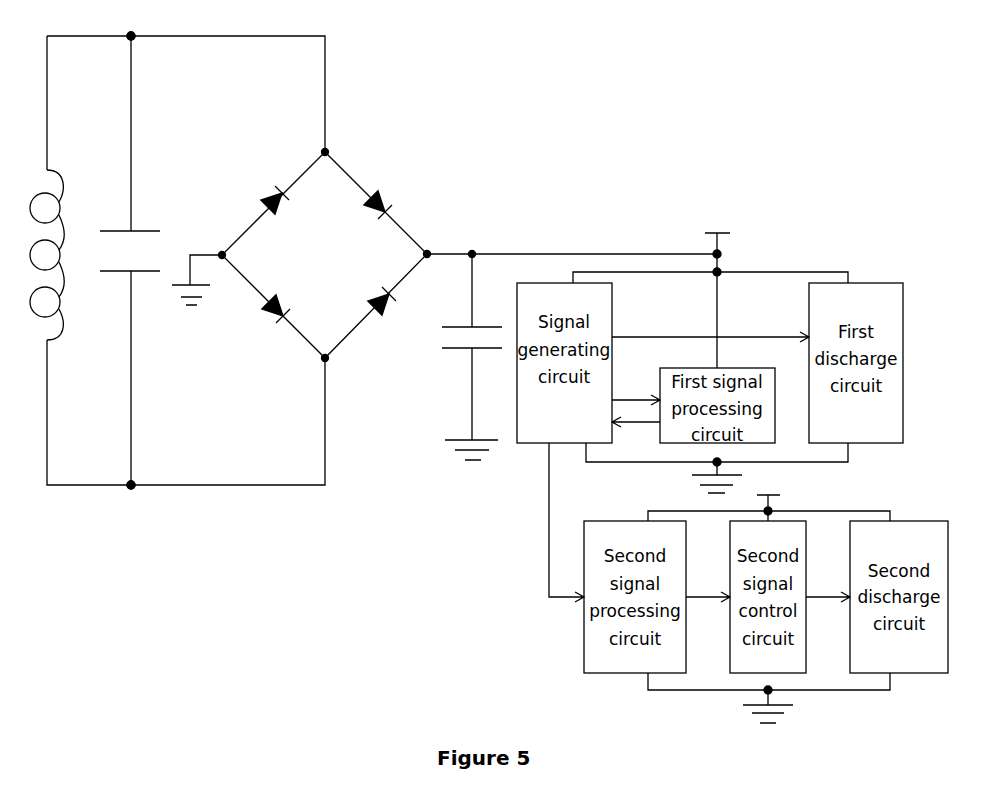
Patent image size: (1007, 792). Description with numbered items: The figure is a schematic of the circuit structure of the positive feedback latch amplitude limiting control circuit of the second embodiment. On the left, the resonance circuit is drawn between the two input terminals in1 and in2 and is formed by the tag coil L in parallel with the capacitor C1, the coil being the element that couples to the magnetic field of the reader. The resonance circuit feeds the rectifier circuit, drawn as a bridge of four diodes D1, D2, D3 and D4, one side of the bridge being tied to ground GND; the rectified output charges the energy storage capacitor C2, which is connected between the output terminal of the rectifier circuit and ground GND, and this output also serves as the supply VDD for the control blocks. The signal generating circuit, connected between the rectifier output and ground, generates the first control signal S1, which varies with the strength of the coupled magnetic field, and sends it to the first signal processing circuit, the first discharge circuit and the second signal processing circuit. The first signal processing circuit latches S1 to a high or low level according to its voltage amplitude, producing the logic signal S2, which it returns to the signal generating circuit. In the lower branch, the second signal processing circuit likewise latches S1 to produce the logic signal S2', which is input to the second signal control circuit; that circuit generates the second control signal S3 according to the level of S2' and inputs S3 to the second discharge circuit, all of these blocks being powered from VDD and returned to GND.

The inductor L is at (60, 255).
The first capacitor C1 is at (136, 251).
The energy storage capacitor C2 is at (458, 303).
The first diode D1 is at (264, 195).
The second diode D2 is at (266, 318).
The third diode D3 is at (369, 297).
The fourth diode D4 is at (386, 193).
The first input terminal in1 is at (128, 21).
The second input terminal in2 is at (131, 499).
The ground GND is at (480, 489).
The supply voltage VDD is at (761, 365).
The first control signal S1 is at (679, 457).
The logic signal S2 is at (636, 435).
The logic signal S2' is at (708, 589).
The second control signal S3 is at (828, 589).